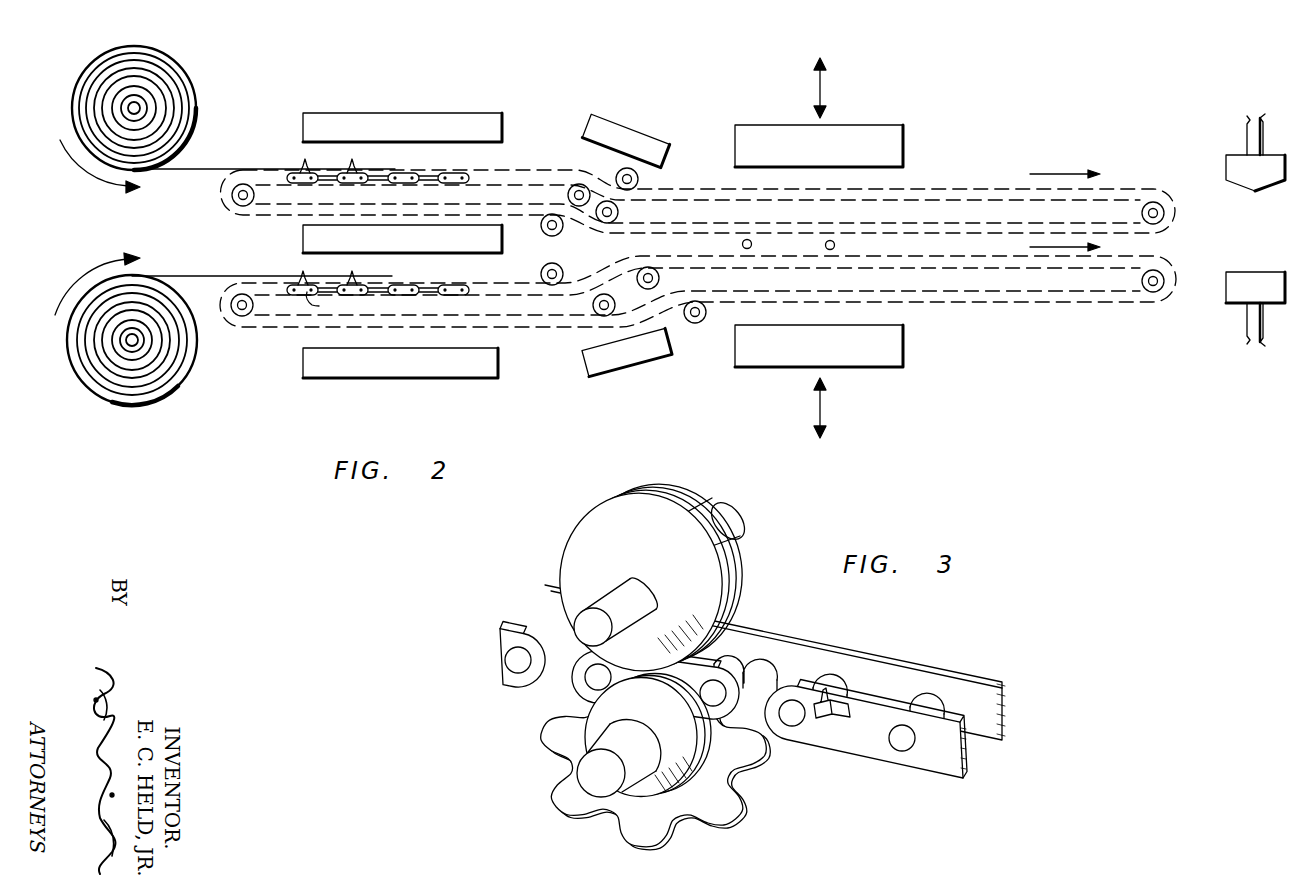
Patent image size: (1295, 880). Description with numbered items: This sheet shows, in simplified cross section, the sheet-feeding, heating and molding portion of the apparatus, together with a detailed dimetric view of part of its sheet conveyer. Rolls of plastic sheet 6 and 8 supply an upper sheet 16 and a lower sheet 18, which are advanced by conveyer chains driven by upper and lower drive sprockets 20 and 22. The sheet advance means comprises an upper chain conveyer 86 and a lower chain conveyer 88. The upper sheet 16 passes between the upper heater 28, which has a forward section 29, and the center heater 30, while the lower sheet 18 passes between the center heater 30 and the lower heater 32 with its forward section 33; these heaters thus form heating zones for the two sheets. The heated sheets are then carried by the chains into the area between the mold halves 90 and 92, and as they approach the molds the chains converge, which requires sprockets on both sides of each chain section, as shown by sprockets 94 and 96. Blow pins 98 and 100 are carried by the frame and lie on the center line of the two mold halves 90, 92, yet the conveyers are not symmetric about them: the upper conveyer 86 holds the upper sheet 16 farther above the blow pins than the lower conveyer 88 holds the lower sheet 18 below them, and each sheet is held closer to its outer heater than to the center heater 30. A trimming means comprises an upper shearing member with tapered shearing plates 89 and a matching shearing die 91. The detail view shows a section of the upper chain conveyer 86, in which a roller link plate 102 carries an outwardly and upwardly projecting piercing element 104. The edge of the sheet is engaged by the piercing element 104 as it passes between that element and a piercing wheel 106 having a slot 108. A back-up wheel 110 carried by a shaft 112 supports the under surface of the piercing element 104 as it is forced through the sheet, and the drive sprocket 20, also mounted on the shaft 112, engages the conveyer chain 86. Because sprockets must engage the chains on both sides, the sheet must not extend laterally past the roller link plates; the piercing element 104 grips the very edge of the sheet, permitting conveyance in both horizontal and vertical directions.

In FIG. 2, the roll of plastic sheet 6 is at (183, 72).
In FIG. 2, the roll of plastic sheet 8 is at (168, 390).
In FIG. 2, the upper sheet 16 is at (205, 170).
In FIG. 2, the lower sheet 18 is at (215, 277).
In FIG. 2, the upper drive sprocket 20 is at (241, 183).
In FIG. 3, the upper drive sprocket 20 is at (755, 757).
In FIG. 2, the lower drive sprocket 22 is at (242, 317).
In FIG. 2, the upper heater 28 is at (397, 112).
In FIG. 2, the forward section of upper heater 29 is at (632, 125).
In FIG. 2, the center heater 30 is at (414, 247).
In FIG. 2, the lower heater 32 is at (385, 378).
In FIG. 2, the forward section of lower heater 33 is at (640, 367).
In FIG. 2, the upper chain conveyer 86 is at (955, 186).
In FIG. 3, the upper chain conveyer 86 is at (897, 657).
In FIG. 2, the lower chain conveyer 88 is at (955, 302).
In FIG. 2, the tapered shearing plates 89 is at (1267, 181).
In FIG. 2, the mold half 90 is at (828, 156).
In FIG. 2, the shearing die 91 is at (1267, 297).
In FIG. 2, the mold half 92 is at (828, 357).
In FIG. 2, the sprocket 94 is at (640, 178).
In FIG. 2, the sprocket 96 is at (580, 207).
In FIG. 2, the blow pin 98 is at (742, 245).
In FIG. 2, the blow pin 100 is at (835, 246).
In FIG. 2, the roller link plate 102 is at (331, 304).
In FIG. 3, the roller link plate 102 is at (882, 752).
In FIG. 2, the piercing element 104 is at (302, 274).
In FIG. 3, the piercing element 104 is at (835, 717).
In FIG. 3, the piercing wheel 106 is at (653, 550).
In FIG. 3, the slot 108 is at (670, 505).
In FIG. 3, the back-up wheel 110 is at (652, 713).
In FIG. 3, the shaft 112 is at (585, 769).